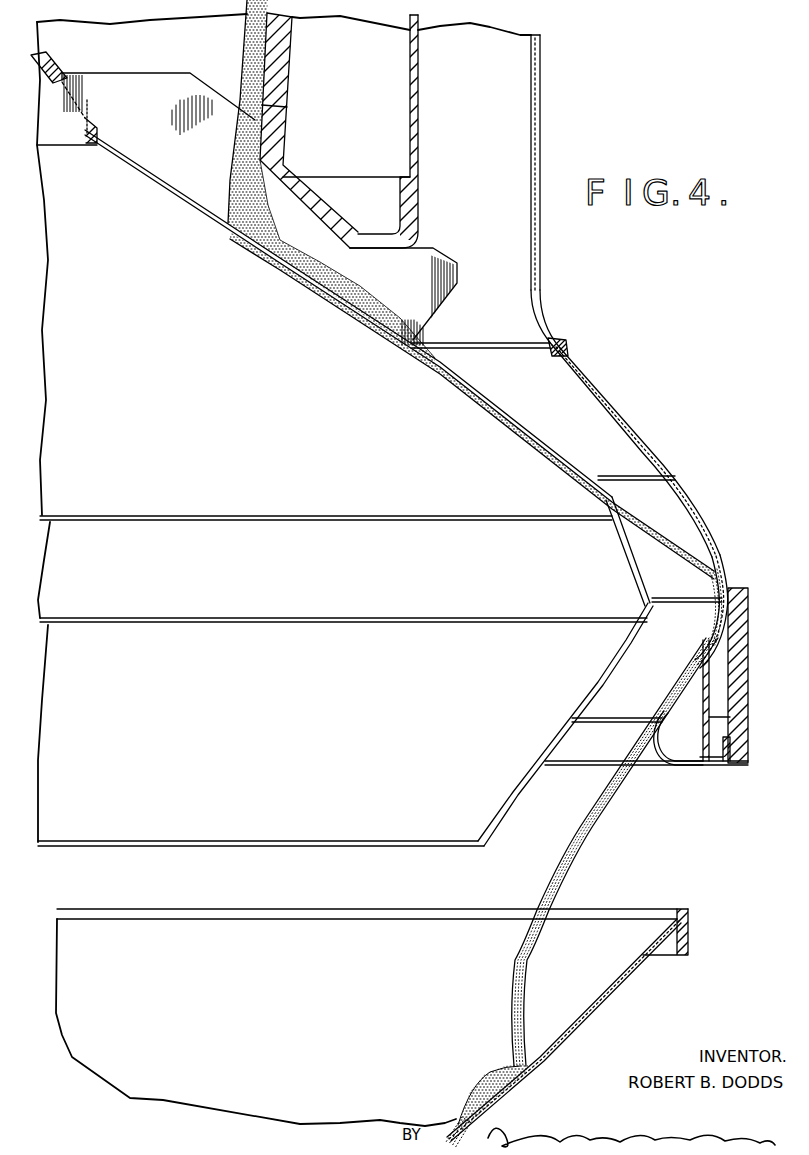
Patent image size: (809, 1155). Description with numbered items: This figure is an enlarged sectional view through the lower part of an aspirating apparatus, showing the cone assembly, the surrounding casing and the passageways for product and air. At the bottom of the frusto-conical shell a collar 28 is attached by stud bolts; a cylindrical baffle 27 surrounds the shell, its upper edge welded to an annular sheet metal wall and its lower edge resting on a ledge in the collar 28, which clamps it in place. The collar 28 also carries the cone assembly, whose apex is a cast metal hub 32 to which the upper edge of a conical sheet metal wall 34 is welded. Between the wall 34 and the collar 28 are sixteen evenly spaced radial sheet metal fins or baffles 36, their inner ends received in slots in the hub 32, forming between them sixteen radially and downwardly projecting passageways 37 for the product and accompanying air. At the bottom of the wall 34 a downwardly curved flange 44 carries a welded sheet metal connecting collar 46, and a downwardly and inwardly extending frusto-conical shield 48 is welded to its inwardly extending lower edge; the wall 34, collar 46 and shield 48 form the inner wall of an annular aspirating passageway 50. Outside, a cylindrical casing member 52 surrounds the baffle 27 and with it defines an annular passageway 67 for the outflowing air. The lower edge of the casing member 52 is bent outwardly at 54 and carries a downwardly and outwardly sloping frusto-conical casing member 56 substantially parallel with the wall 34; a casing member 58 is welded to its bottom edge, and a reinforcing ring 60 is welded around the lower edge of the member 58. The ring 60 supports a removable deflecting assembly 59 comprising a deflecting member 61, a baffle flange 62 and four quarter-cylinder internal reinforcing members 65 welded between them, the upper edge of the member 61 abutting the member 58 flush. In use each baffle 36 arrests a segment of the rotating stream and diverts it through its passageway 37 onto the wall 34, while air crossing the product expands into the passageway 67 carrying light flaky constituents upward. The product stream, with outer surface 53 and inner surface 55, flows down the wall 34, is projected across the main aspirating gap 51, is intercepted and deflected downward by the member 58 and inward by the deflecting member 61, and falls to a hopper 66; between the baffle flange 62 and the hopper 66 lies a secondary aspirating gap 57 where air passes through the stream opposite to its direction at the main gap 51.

The cylindrical baffle 27 is at (410, 141).
The collar 28 is at (278, 137).
The cast metal hub 32 is at (52, 63).
The conical sheet metal wall 34 is at (428, 368).
The radial sheet metal fins or baffles 36 is at (192, 90).
The passageways 37 is at (328, 246).
The downwardly curved flange 44 is at (605, 507).
The sheet metal connecting collar 46 is at (440, 622).
The frusto-conical shield 48 is at (485, 810).
The annular aspirating passageway 50 is at (660, 645).
The main aspirating gap 51 is at (665, 520).
The cylindrical casing member 52 is at (540, 296).
The upper or outer surface of the product stream 53 is at (513, 414).
The outwardly bent lower edge 54 is at (550, 332).
The lower or inner surface of the product stream 55 is at (660, 540).
The frusto-conical casing member 56 is at (588, 375).
The secondary aspirating gap 57 is at (578, 832).
The casing member 58 is at (720, 546).
The deflecting assembly 59 is at (670, 768).
The reinforcing ring 60 is at (750, 610).
The deflecting member 61 is at (718, 640).
The baffle flange 62 is at (715, 767).
The internal sheet metal reinforcing members 65 is at (712, 716).
The hopper 66 is at (560, 1040).
The annular passageway 67 is at (480, 100).